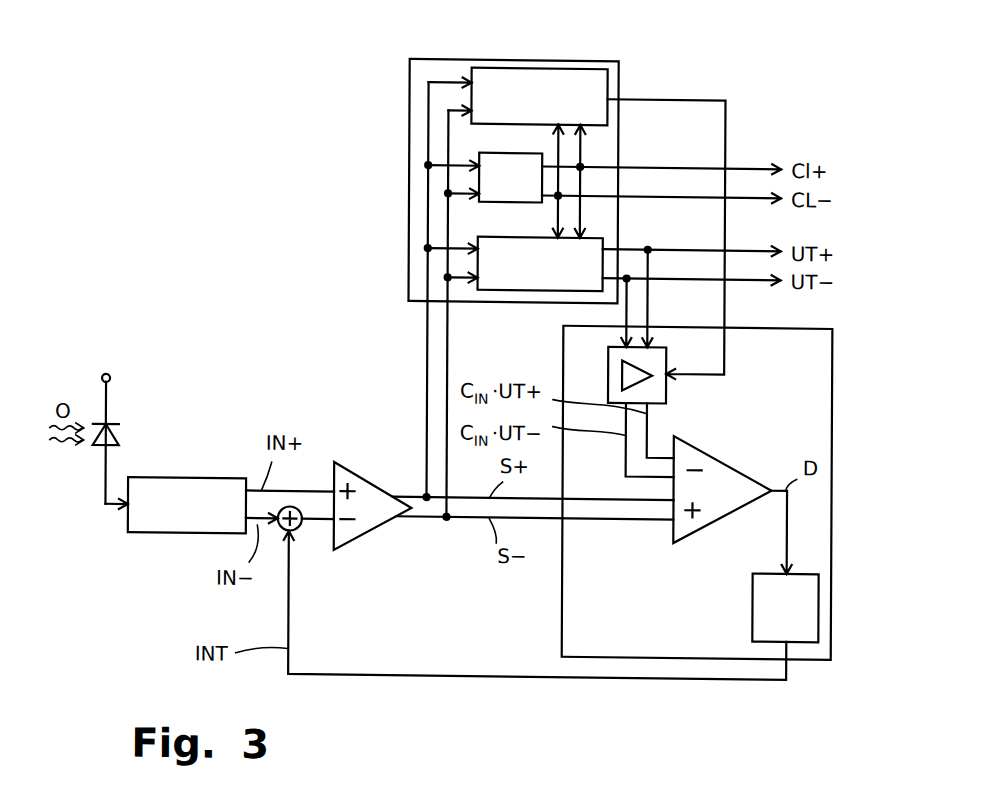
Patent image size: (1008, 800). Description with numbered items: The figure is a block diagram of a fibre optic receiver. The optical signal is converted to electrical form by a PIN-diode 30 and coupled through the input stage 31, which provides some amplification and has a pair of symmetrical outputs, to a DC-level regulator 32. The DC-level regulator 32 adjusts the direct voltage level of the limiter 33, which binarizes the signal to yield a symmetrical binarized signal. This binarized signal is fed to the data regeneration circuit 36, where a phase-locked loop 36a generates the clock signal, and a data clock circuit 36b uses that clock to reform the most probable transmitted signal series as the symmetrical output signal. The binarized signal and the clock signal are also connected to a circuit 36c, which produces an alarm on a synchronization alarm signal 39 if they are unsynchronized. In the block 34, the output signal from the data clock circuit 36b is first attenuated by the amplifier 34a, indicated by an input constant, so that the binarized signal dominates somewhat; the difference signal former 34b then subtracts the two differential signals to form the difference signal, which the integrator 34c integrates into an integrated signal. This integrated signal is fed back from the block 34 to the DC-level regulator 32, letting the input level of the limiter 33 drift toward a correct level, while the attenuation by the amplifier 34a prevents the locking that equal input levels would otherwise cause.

The PIN-diode 30 is at (118, 443).
The input stage 31 is at (150, 528).
The DC-level regulator 32 is at (300, 531).
The limiter 33 is at (352, 480).
The block 34 is at (623, 659).
The amplifier 34a is at (660, 391).
The difference signal former 34b is at (677, 533).
The integrator 34c is at (760, 622).
The data regeneration circuit 36 is at (622, 66).
The phase-locked loop 36a is at (485, 200).
The data clock circuit 36b is at (590, 246).
The circuit 36c is at (575, 74).
The synchronization alarm signal 39 is at (724, 112).